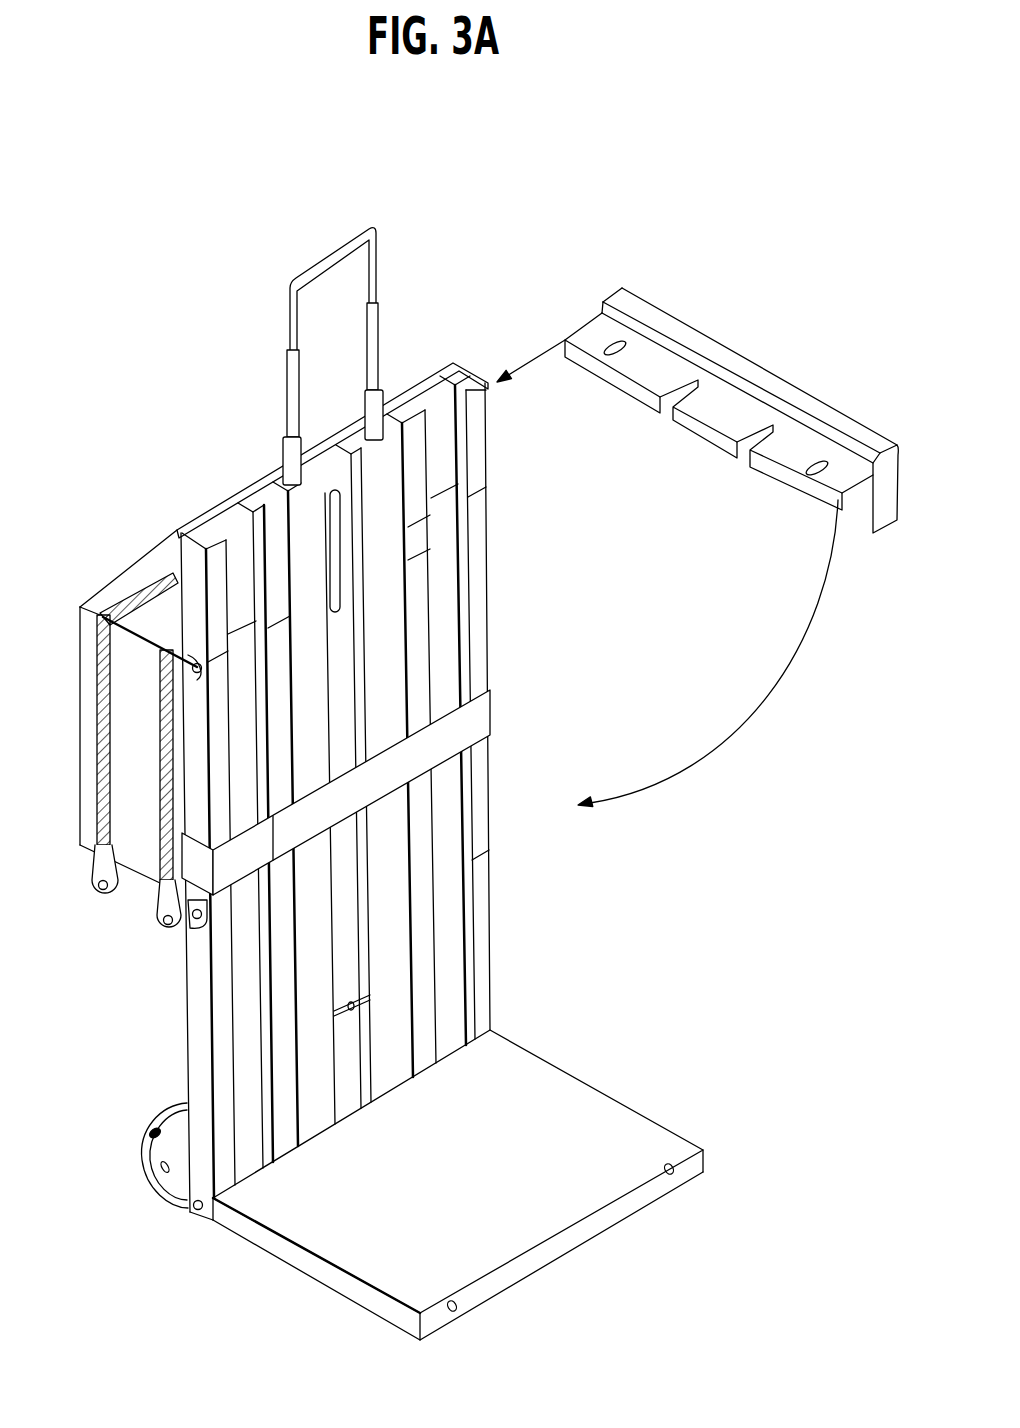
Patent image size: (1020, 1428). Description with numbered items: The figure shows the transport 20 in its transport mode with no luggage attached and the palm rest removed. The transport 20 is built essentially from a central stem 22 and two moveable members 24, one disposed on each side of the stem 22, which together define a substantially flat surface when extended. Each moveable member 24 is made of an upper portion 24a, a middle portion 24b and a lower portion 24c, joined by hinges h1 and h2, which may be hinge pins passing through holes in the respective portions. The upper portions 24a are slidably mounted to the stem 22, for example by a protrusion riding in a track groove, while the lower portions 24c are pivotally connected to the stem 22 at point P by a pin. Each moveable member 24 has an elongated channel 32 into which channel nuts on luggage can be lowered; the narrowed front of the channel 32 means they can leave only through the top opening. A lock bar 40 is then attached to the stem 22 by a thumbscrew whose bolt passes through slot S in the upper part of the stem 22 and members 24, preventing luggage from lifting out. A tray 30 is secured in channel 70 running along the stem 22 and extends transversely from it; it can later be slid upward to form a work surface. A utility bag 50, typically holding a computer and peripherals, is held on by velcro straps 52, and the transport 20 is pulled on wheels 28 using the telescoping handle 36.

The transport 20 is at (557, 182).
The stem 22 is at (385, 967).
The moveable member 24 is at (478, 552).
The upper portion 24a is at (480, 436).
The middle portion 24b is at (480, 612).
The lower portion 24c is at (482, 820).
The wheels 28 is at (142, 1157).
The tray 30 is at (610, 1117).
The elongated channel 32 is at (240, 533).
The telescoping handle 36 is at (378, 322).
The lock bar 40 is at (813, 403).
The utility bag 50 is at (92, 648).
The velcro straps 52 is at (483, 715).
The channel 70 is at (347, 972).
The slot S is at (337, 495).
The hinge h1 is at (160, 673).
The hinge h2 is at (188, 918).
The point p P is at (194, 1212).